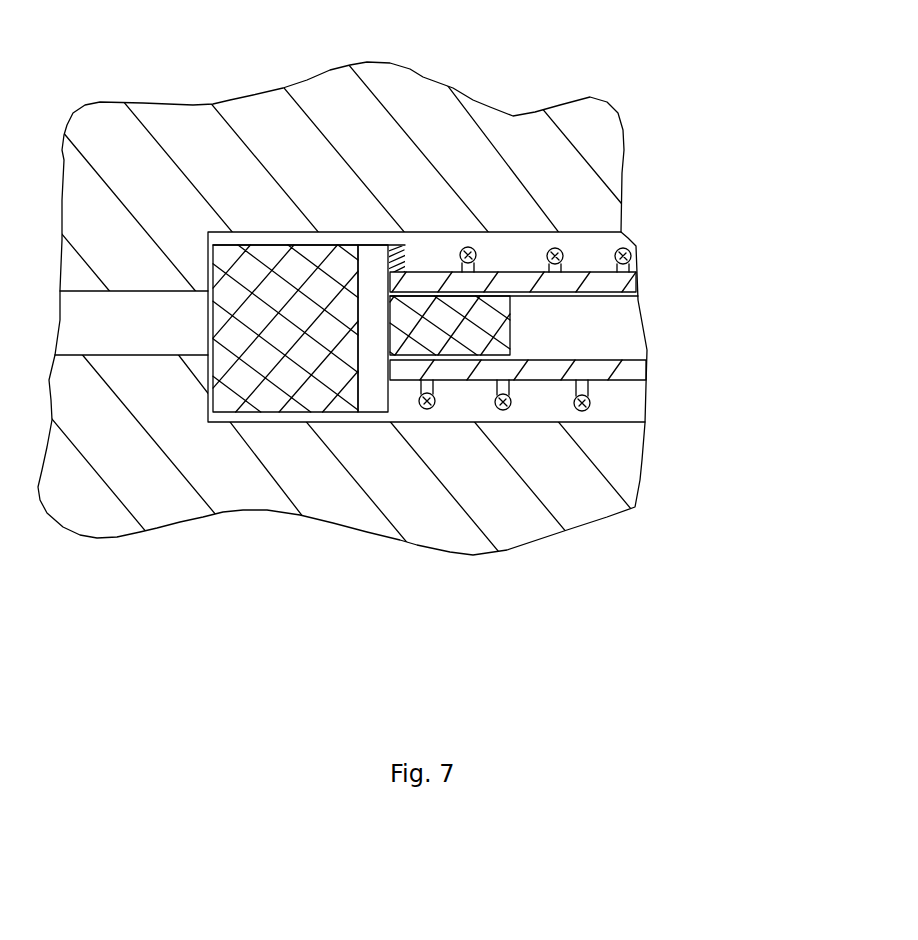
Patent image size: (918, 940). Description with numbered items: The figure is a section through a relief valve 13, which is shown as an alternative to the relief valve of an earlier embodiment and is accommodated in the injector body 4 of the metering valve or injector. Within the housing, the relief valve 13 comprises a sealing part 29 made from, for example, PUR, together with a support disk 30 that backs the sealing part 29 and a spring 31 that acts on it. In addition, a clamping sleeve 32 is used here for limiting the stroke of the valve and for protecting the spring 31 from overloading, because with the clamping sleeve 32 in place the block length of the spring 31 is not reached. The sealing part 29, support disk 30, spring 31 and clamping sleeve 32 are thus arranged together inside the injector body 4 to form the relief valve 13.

The injector body 4 is at (203, 135).
The relief valve 13 is at (515, 334).
The sealing part 29 is at (278, 385).
The support disk 30 is at (372, 393).
The spring 31 is at (473, 262).
The clamping sleeve 32 is at (547, 367).